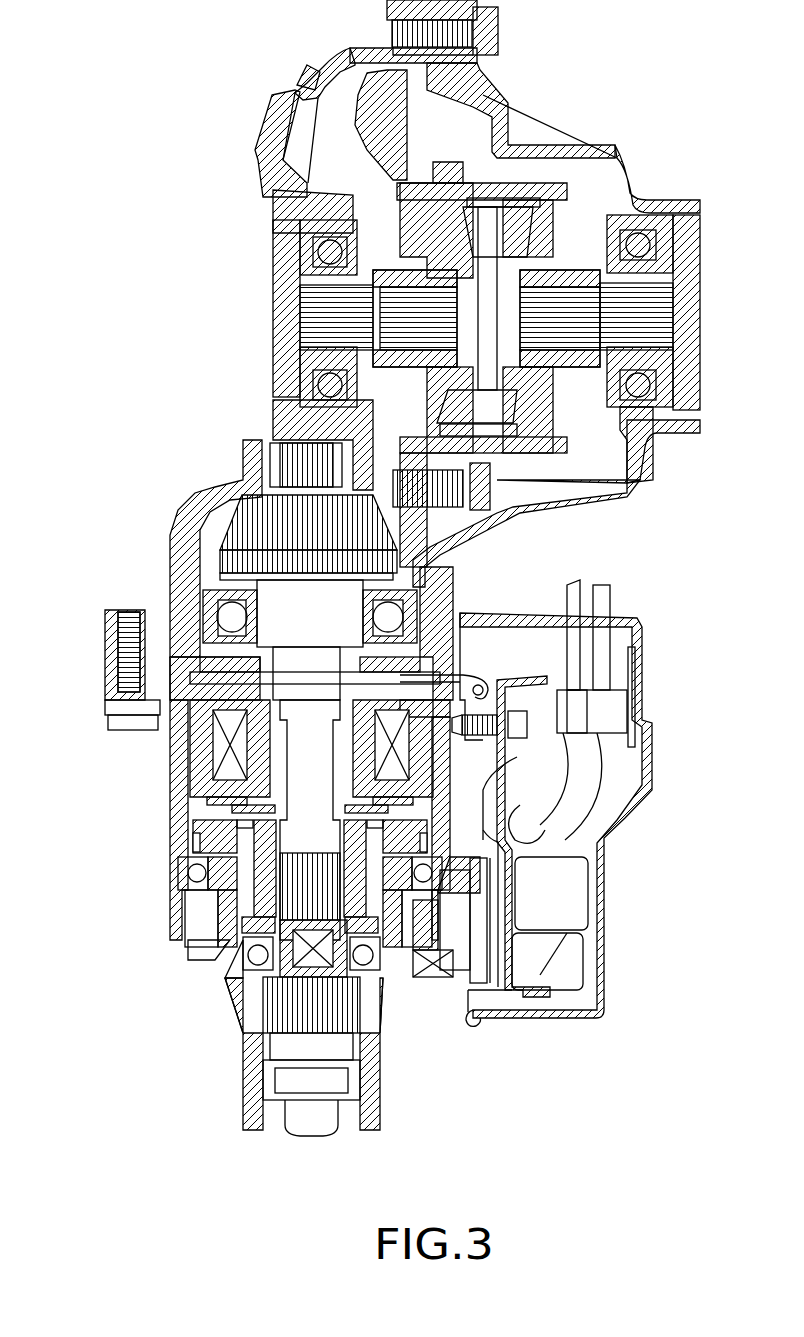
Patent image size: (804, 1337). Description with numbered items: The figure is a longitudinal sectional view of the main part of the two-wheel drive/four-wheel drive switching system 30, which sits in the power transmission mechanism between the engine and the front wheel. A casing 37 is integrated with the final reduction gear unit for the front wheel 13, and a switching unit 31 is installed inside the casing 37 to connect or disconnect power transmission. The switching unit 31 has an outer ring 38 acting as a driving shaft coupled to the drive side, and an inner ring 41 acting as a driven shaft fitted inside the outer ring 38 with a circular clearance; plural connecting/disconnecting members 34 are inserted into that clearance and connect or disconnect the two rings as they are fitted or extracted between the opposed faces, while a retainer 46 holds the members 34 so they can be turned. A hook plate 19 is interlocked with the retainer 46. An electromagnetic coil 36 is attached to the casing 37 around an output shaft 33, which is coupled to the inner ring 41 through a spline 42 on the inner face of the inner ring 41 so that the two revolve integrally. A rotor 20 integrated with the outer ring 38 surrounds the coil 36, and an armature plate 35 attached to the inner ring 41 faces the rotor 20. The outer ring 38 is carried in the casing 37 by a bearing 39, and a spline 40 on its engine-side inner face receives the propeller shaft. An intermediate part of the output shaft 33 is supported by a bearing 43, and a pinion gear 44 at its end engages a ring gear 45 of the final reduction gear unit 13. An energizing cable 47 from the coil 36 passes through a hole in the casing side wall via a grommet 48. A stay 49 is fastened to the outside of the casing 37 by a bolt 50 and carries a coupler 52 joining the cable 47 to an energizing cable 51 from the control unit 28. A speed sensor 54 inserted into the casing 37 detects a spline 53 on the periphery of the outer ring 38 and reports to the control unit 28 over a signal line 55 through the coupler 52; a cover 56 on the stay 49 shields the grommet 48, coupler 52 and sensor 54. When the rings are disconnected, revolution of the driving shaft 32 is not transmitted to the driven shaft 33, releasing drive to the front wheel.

The final reduction gear unit for the front wheel 13 is at (558, 128).
The hook plate 19 is at (252, 822).
The rotor 20 is at (195, 742).
The control unit 28 is at (497, 860).
The two-wheel drive/four-wheel drive switching system 30 is at (197, 918).
The switching unit 31 is at (172, 835).
The driving shaft 32 is at (328, 1127).
The output shaft 33 is at (280, 618).
The connecting/disconnecting members 34 is at (255, 906).
The armature plate 35 is at (235, 799).
The electromagnetic coil 36 is at (230, 758).
The casing 37 is at (100, 680).
The outer ring 38 is at (378, 1110).
The bearing 39 is at (200, 878).
The spline 40 is at (320, 1030).
The inner ring 41 is at (220, 960).
The spline 42 is at (310, 882).
The bearing 43 is at (390, 624).
The pinion gear 44 is at (227, 528).
The ring gear 45 is at (365, 116).
The retainer 46 is at (250, 850).
The energizing cable 47 is at (490, 675).
The grommet 48 is at (460, 672).
The stay 49 is at (512, 935).
The bolt 50 is at (535, 725).
The energizing cable 51 is at (612, 597).
The coupler 52 is at (545, 829).
The spline 53 is at (235, 950).
The speed sensor 54 is at (443, 943).
The signal line 55 is at (588, 605).
The cover 56 is at (600, 900).